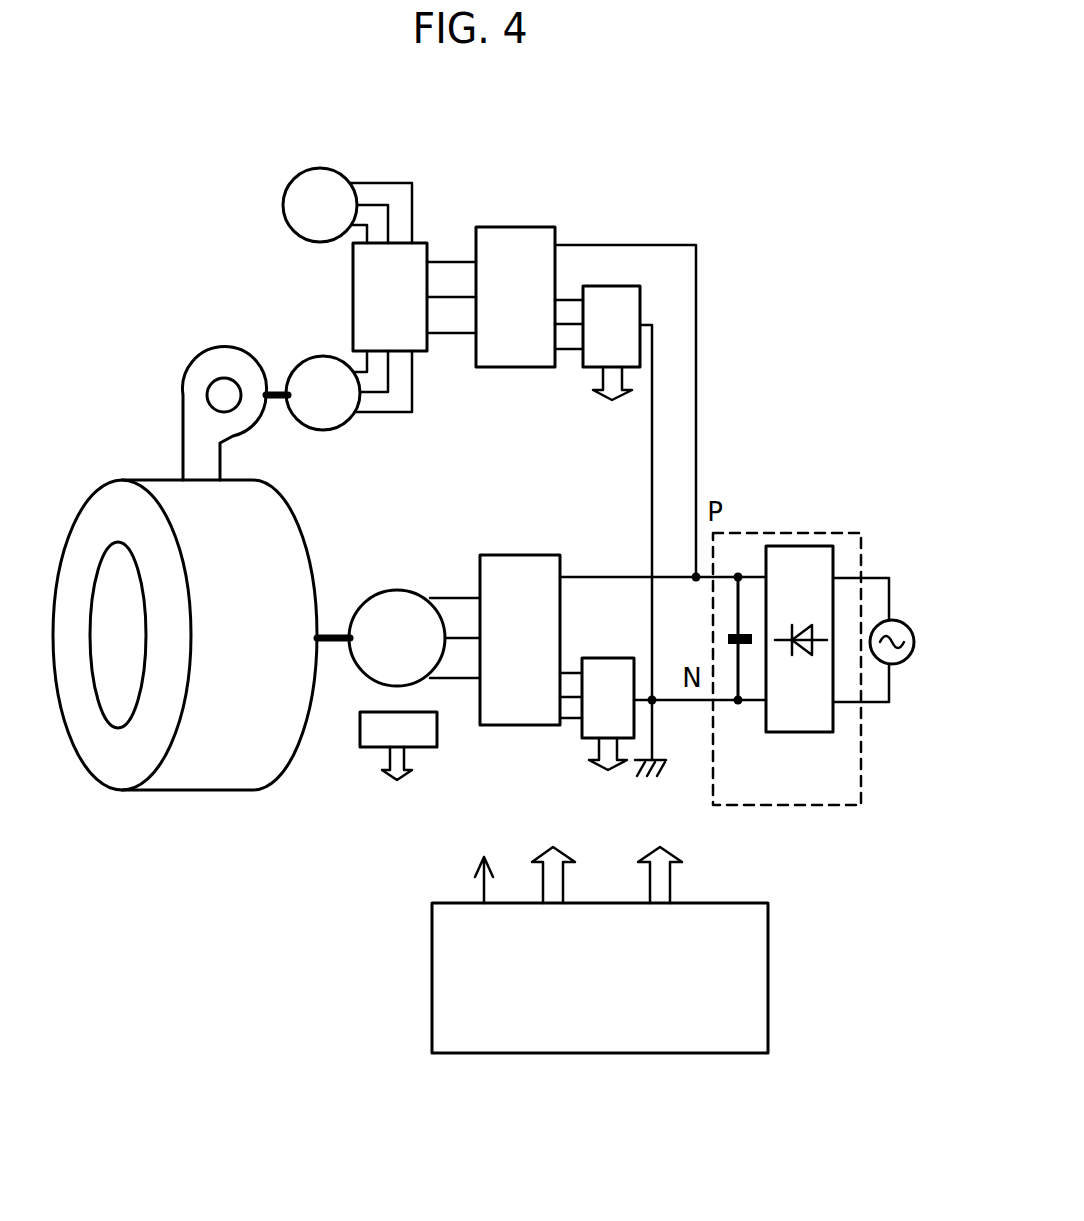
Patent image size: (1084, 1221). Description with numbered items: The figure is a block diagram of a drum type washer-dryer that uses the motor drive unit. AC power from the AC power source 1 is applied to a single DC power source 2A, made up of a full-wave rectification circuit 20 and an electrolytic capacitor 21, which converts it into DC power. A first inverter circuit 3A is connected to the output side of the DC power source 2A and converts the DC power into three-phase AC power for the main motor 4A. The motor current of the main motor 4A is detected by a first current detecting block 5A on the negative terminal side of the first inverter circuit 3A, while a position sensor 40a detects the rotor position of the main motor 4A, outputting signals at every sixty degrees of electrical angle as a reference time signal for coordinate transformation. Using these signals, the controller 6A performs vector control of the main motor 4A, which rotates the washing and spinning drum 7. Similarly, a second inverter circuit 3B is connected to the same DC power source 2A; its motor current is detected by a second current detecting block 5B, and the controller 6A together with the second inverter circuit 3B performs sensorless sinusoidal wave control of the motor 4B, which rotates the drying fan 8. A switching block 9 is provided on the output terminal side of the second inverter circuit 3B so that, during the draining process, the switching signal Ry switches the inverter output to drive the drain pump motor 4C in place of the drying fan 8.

The AC power source 1 is at (899, 621).
The DC power source 2A is at (787, 637).
The first inverter circuit 3A is at (513, 554).
The second inverter circuit 3B is at (514, 227).
The main motor 4A is at (372, 592).
The motor 4B is at (317, 433).
The drain pump motor 4C is at (317, 167).
The first current detecting block 5A is at (600, 657).
The second current detecting block 5B is at (607, 284).
The controller 6A is at (430, 987).
The washing & spinning drum 7 is at (100, 487).
The drying fan 8 is at (202, 360).
The switching block 9 is at (352, 300).
The full-wave rectification circuit 20 is at (802, 733).
The electrolytic capacitor 21 is at (745, 658).
The position sensor 40a is at (360, 750).